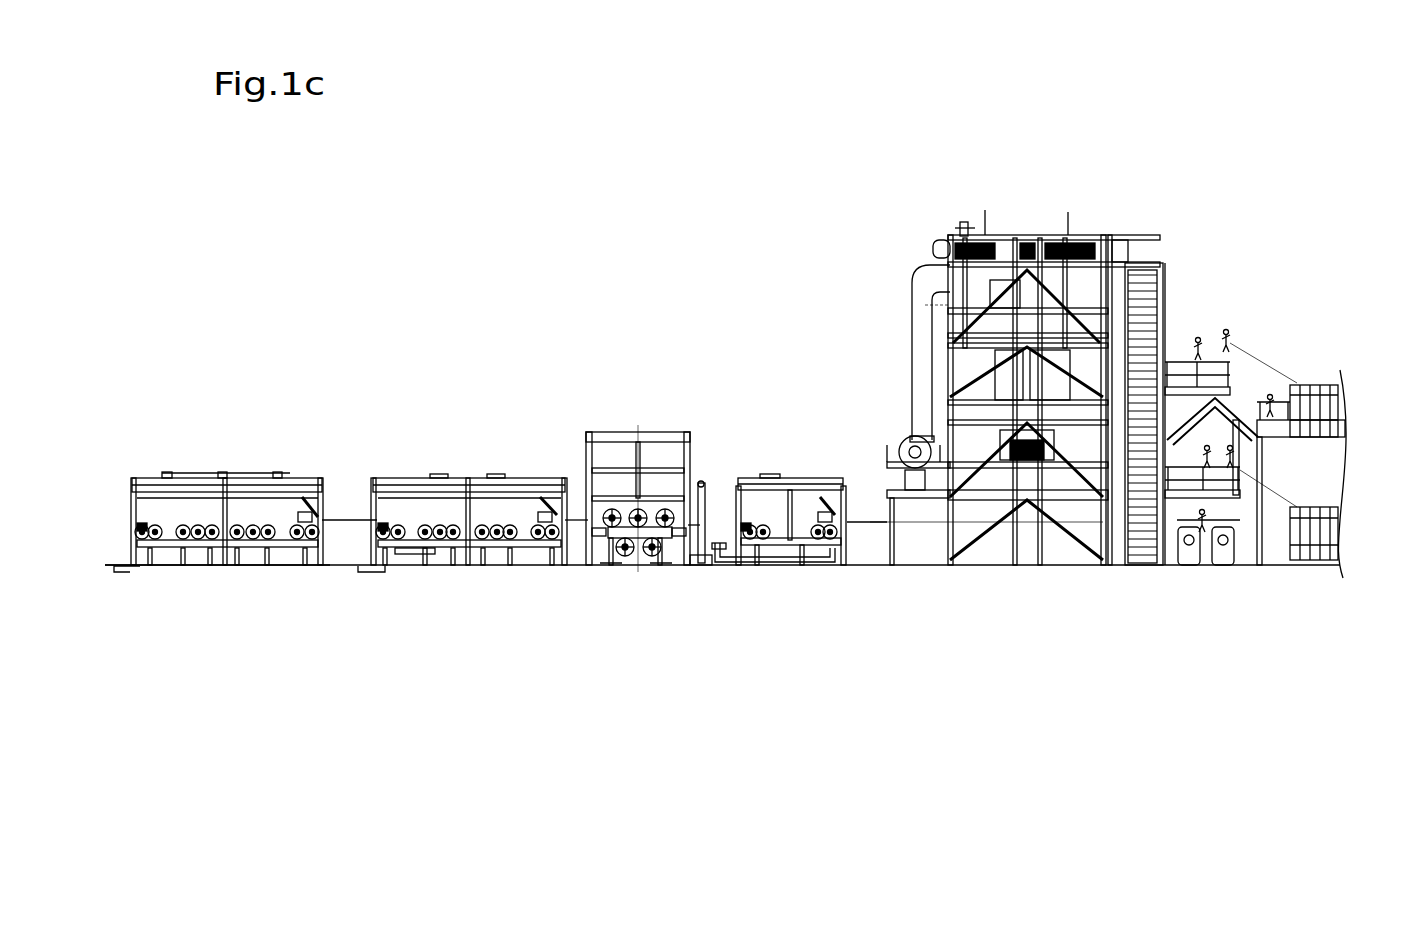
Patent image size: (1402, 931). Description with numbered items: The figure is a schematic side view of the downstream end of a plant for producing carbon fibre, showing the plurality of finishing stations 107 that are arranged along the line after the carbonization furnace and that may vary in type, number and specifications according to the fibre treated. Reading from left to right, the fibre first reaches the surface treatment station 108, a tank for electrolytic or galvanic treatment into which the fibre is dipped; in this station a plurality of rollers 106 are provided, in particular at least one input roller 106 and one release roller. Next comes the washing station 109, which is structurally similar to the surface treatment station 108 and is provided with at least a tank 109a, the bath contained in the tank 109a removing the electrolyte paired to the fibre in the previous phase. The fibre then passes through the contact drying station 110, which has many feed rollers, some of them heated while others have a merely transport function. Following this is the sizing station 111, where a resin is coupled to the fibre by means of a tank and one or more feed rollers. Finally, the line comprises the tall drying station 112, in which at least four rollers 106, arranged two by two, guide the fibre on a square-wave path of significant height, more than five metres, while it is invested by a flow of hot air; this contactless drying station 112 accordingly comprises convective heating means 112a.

The rollers 106 is at (133, 522).
The finishing stations 107 is at (574, 244).
The surface treatment station 108 is at (241, 450).
The washing station 109 is at (477, 446).
The tank 109a is at (415, 566).
The contact drying station 110 is at (666, 414).
The sizing station 111 is at (812, 470).
The drying station 112 is at (1004, 588).
The convective heating means 112a is at (1000, 352).